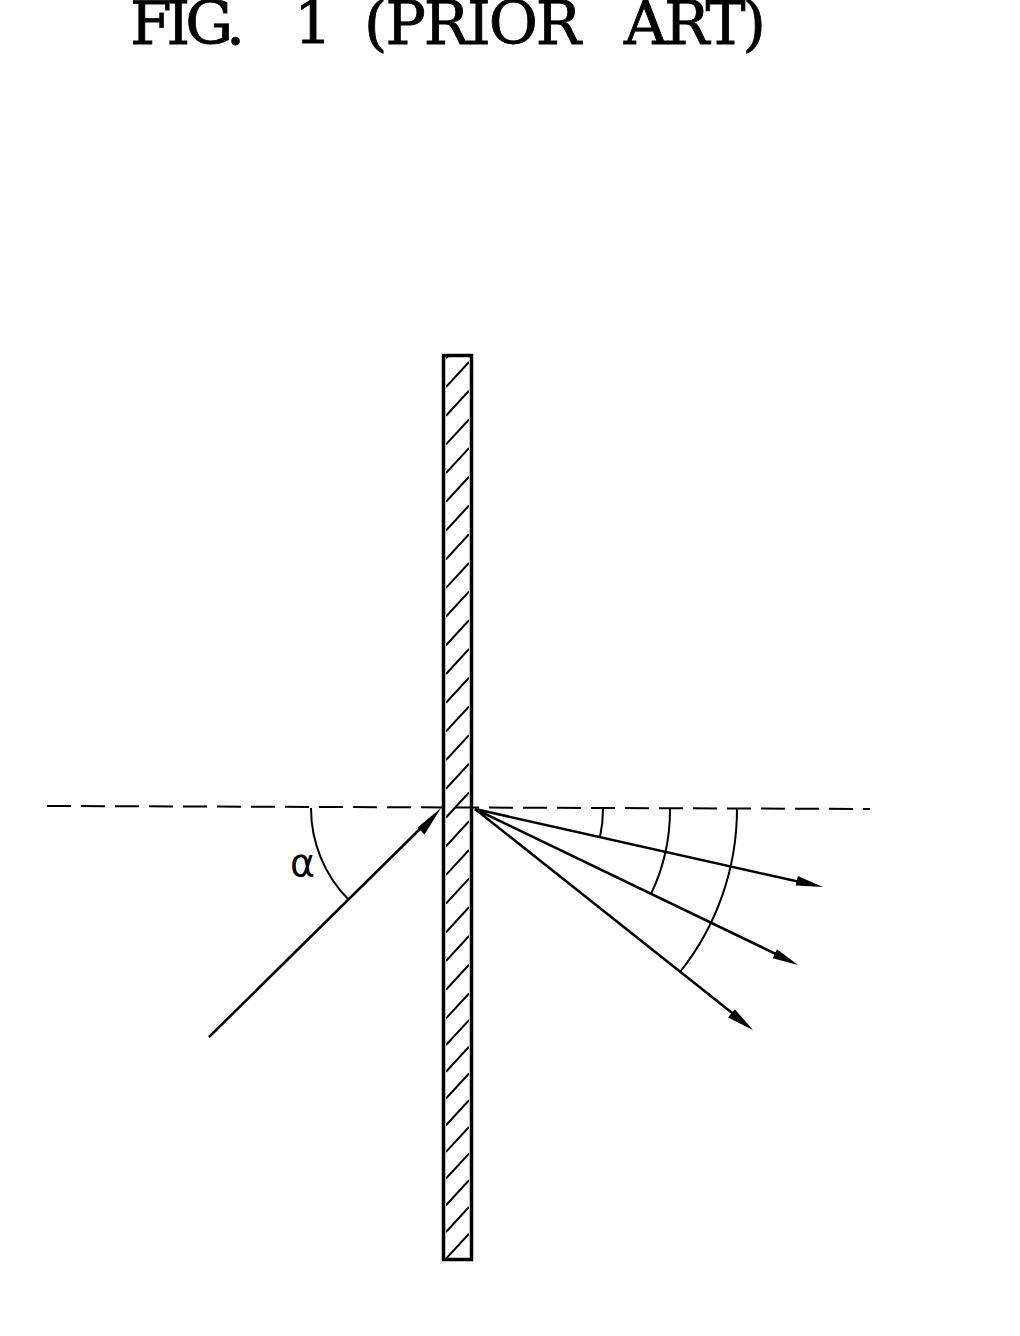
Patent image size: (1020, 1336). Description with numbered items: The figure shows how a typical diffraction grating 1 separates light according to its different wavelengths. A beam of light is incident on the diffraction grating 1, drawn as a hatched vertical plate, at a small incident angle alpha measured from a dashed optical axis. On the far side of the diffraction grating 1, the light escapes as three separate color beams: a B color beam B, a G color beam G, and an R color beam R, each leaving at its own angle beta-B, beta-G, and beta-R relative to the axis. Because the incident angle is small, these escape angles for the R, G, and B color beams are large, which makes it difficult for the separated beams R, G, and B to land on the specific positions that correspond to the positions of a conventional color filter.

The diffraction grating 1 is at (466, 487).
The B color beam B is at (669, 861).
The G color beam G is at (656, 904).
The R color beam R is at (630, 940).